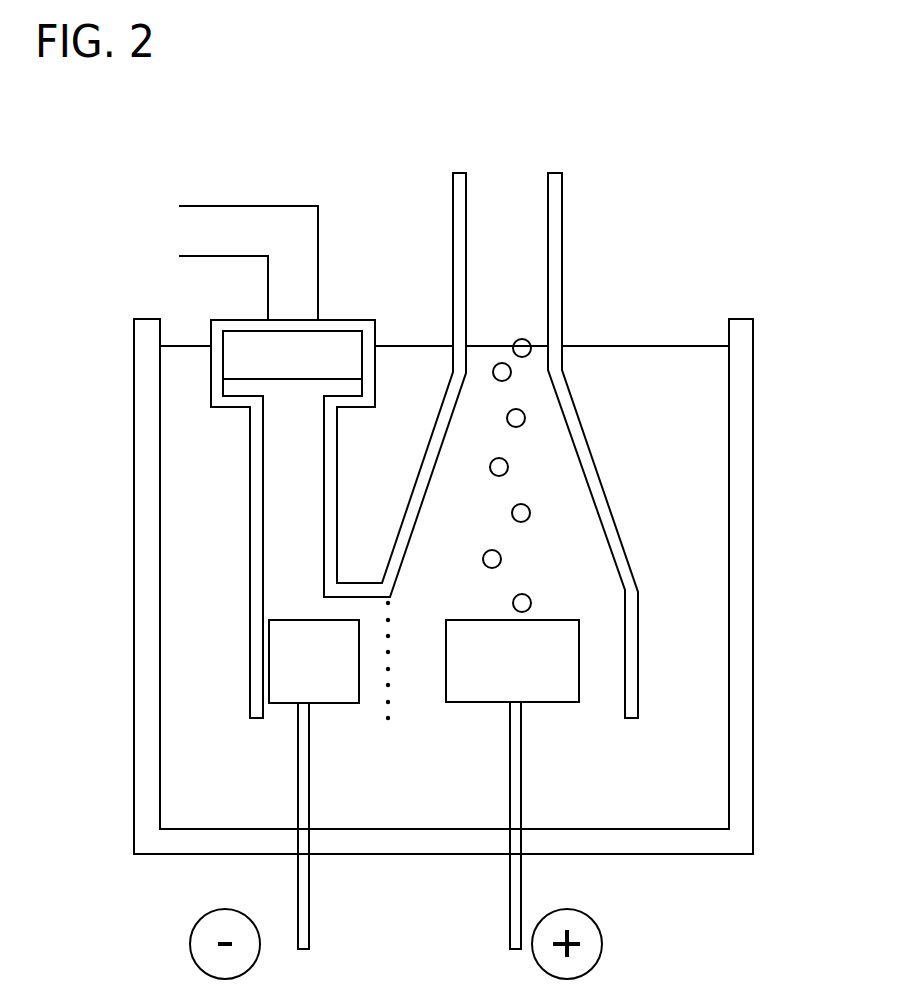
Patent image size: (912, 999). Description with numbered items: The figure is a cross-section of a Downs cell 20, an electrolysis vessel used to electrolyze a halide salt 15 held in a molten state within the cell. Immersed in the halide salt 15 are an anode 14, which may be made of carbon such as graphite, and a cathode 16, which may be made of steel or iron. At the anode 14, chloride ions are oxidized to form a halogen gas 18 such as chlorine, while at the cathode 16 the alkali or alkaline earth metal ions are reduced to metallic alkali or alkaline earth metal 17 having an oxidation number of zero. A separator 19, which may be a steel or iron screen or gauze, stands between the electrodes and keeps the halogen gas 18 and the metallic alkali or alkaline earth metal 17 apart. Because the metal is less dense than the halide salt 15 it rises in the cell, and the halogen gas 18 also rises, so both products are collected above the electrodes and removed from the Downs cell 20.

The Downs cell 20 is at (127, 198).
The halide salt 15 is at (692, 666).
The metallic alkali or alkaline earth metal 17 is at (298, 246).
The halogen gas 18 is at (513, 259).
The cathode 16 is at (285, 703).
The anode 14 is at (572, 702).
The separator 19 is at (389, 718).